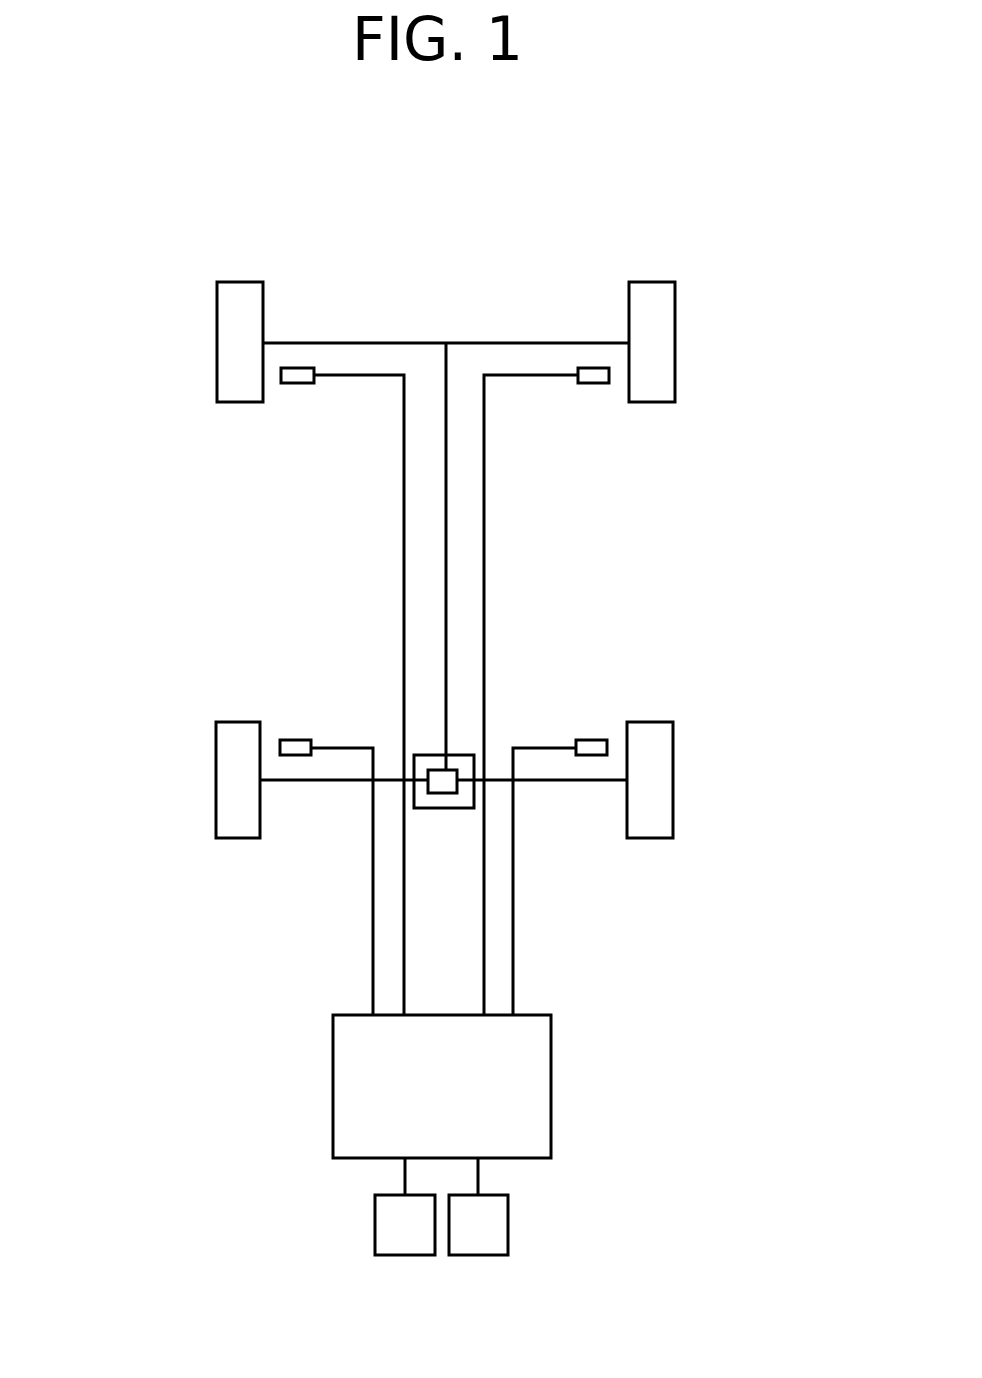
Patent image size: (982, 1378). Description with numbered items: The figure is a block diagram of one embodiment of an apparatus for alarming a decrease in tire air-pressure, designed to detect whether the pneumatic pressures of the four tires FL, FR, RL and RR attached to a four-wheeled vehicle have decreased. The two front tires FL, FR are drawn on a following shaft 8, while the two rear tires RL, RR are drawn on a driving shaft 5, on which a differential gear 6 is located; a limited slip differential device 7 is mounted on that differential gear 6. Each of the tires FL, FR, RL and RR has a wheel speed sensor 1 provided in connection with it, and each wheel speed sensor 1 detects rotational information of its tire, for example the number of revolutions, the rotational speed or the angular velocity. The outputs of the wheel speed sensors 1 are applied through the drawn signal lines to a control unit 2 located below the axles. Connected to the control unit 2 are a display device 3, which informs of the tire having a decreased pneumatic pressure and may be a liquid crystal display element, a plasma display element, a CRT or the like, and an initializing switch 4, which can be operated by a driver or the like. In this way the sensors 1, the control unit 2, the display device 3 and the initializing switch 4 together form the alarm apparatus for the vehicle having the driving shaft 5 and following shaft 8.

The wheel speed sensor 1 is at (285, 742).
The control unit 2 is at (515, 1102).
The display device 3 is at (493, 1227).
The initializing switch 4 is at (393, 1227).
The driving shaft 5 is at (330, 782).
The differential gear 6 is at (430, 815).
The limited slip differential device 7 is at (443, 782).
The following shaft 8 is at (383, 342).
The front left tire FL is at (222, 330).
The front right tire FR is at (653, 333).
The rear left tire RL is at (230, 773).
The rear right tire RR is at (657, 775).